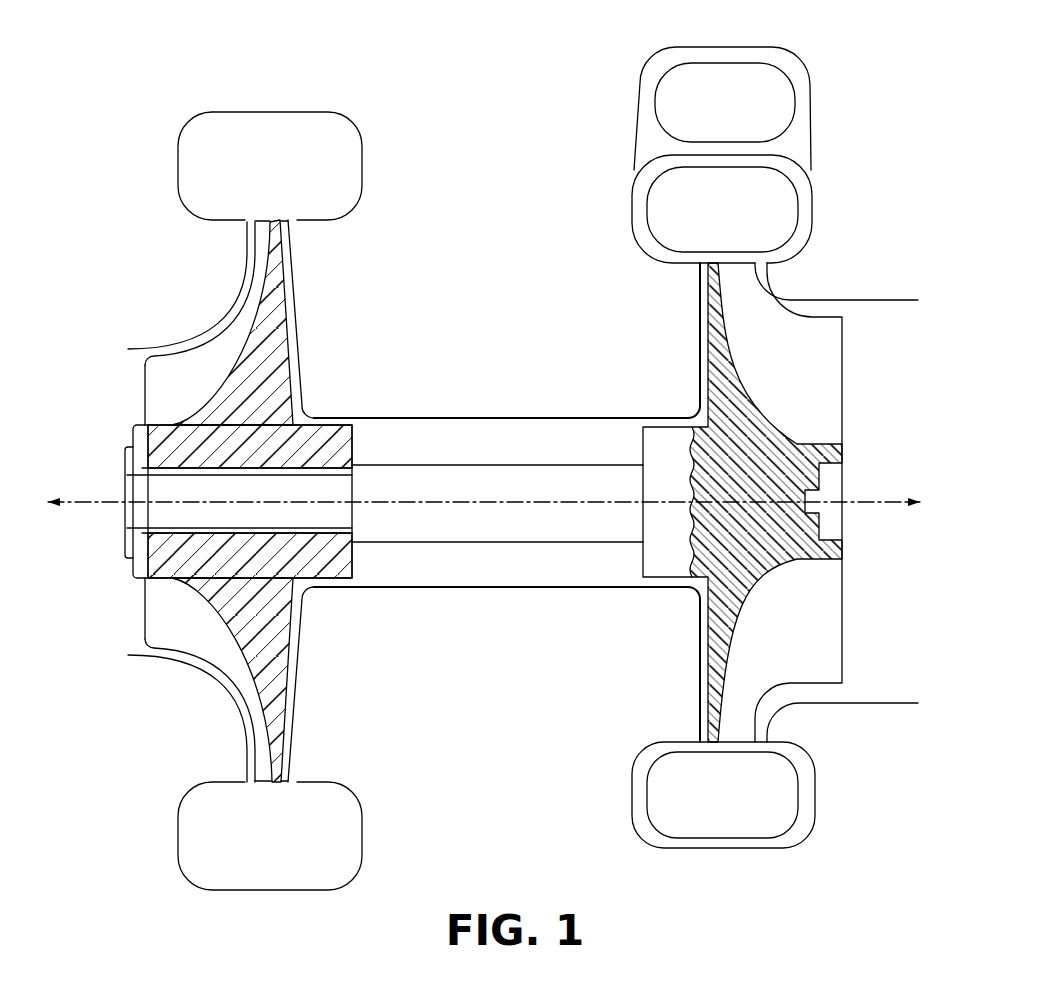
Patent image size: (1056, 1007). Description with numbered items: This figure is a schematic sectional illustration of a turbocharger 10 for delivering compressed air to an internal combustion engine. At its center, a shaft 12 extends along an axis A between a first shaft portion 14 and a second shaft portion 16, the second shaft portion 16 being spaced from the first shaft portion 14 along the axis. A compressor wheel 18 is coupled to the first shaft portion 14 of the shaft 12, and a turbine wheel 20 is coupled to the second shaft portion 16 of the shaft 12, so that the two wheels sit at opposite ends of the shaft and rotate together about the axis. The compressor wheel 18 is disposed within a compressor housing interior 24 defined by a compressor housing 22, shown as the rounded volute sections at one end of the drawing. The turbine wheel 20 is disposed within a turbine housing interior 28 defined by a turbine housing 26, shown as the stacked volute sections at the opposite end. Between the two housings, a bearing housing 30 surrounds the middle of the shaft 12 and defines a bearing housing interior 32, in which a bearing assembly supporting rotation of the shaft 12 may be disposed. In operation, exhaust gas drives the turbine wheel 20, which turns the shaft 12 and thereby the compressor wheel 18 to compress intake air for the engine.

The turbocharger 10 is at (70, 80).
The shaft 12 is at (473, 477).
The first shaft portion 14 is at (292, 495).
The second shaft portion 16 is at (642, 487).
The compressor wheel 18 is at (200, 445).
The turbine wheel 20 is at (777, 461).
The compressor housing 22 is at (178, 175).
The compressor housing interior 24 is at (140, 352).
The turbine housing 26 is at (814, 164).
The turbine housing interior 28 is at (897, 302).
The bearing housing 30 is at (513, 416).
The bearing housing interior 32 is at (580, 586).